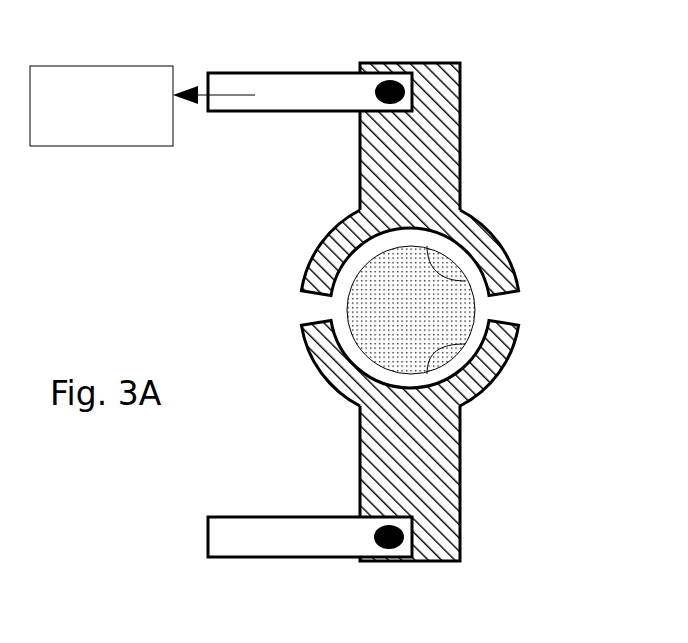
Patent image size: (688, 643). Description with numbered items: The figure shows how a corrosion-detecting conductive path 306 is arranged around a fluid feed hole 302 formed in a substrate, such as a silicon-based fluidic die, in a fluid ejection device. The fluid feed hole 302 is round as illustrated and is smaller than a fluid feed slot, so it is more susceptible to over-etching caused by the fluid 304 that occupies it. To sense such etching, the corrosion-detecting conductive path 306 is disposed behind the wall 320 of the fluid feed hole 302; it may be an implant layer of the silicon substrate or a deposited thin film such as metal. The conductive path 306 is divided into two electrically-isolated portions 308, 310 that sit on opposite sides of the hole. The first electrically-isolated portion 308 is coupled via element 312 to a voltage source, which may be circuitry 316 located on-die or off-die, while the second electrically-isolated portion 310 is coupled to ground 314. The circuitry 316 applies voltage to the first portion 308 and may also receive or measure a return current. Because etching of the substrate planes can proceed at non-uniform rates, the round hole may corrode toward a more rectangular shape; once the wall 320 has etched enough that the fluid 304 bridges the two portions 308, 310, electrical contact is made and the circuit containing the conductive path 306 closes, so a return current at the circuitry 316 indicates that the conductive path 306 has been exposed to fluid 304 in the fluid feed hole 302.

The fluid feed hole 302 is at (465, 344).
The fluid 304 is at (408, 313).
The corrosion-detecting conductive path 306 is at (301, 245).
The first electrically-isolated portion 308 is at (380, 170).
The second electrically-isolated portion 310 is at (372, 435).
The element 312 is at (287, 85).
The ground 314 is at (233, 533).
The circuitry 316 is at (126, 136).
The wall 320 is at (465, 281).